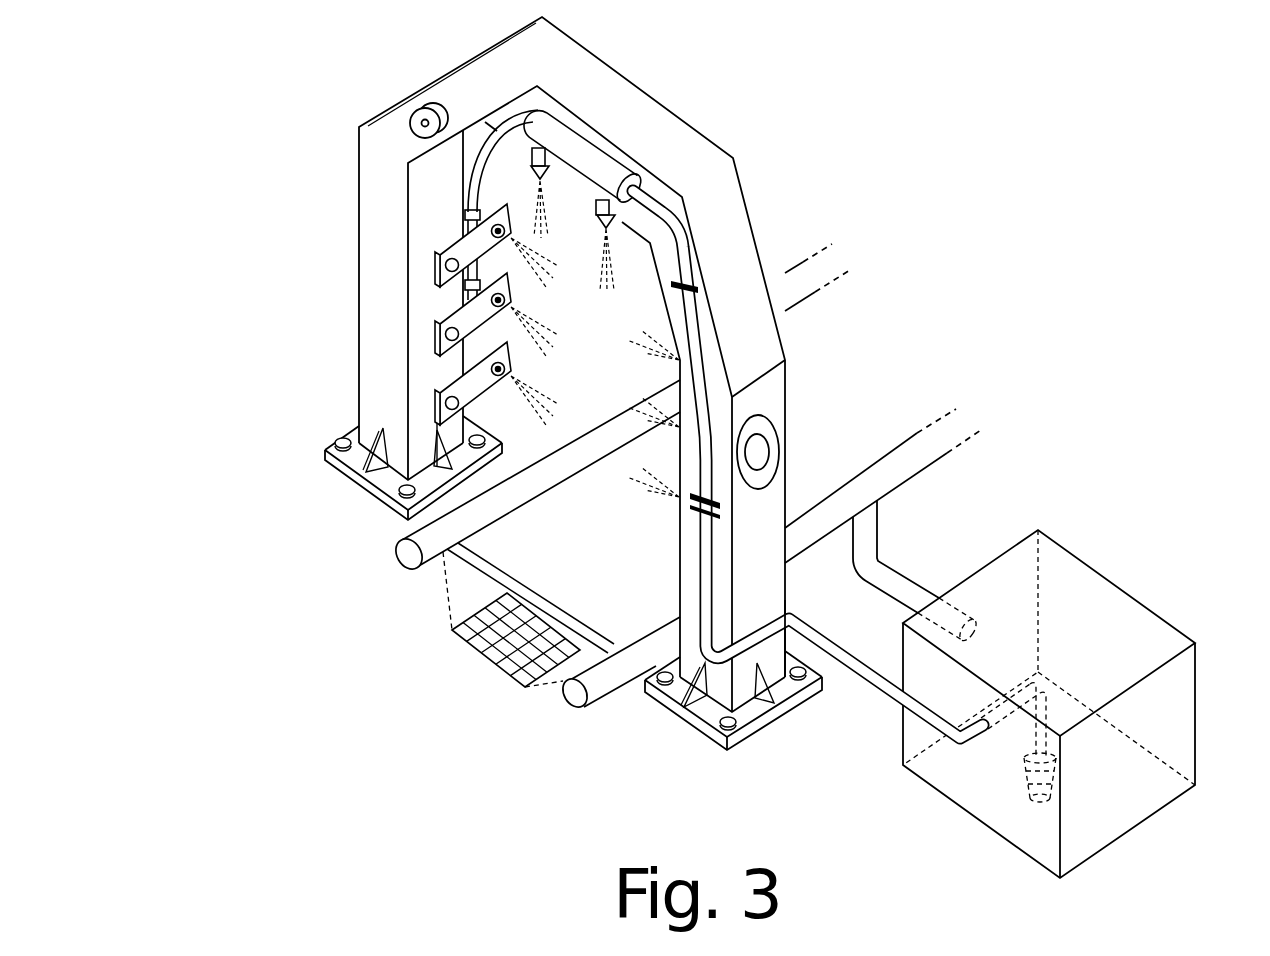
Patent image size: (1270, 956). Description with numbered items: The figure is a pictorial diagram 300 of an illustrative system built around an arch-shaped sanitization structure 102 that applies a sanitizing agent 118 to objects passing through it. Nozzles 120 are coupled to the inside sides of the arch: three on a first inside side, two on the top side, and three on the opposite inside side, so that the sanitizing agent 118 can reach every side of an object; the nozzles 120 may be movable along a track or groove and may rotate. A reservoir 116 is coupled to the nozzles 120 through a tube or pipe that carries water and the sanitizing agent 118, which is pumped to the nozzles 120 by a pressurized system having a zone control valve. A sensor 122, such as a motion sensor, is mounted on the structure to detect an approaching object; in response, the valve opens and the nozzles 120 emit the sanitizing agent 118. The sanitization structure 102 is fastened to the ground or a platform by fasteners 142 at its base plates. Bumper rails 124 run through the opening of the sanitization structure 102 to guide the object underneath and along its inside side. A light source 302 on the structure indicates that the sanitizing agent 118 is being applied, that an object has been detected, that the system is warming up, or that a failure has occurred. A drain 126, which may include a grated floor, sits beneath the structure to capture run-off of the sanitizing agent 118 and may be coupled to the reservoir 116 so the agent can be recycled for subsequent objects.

The pictorial diagram 300 is at (130, 66).
The sanitization structure 102 is at (680, 117).
The sensor 122 is at (417, 108).
The nozzles 120 is at (437, 253).
The sanitizing agent 118 is at (470, 284).
The fasteners 142 is at (337, 438).
The bumper rails 124 is at (397, 557).
The drain 126 is at (500, 672).
The light source 302 is at (771, 442).
The reservoir 116 is at (1063, 547).